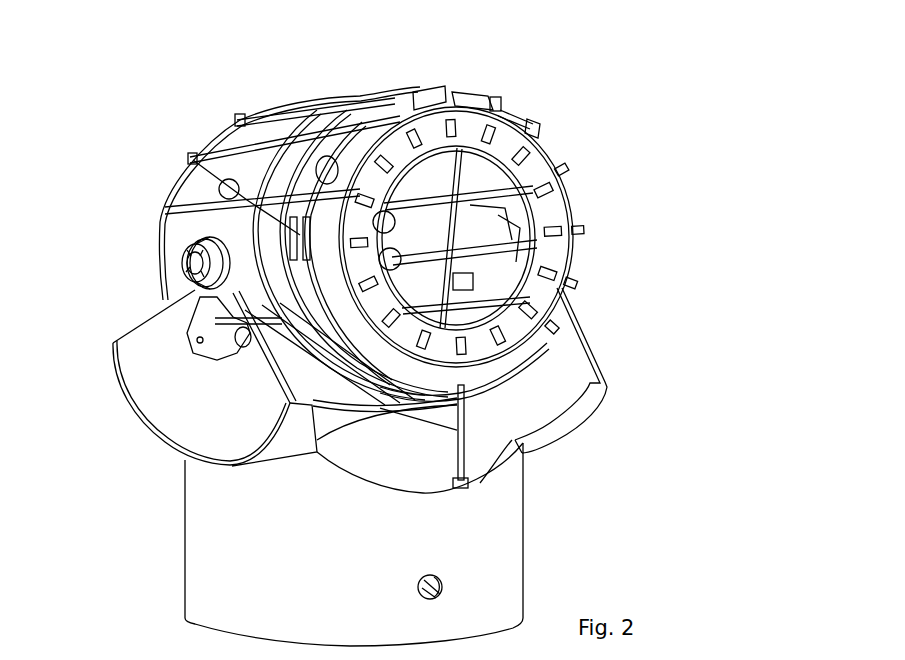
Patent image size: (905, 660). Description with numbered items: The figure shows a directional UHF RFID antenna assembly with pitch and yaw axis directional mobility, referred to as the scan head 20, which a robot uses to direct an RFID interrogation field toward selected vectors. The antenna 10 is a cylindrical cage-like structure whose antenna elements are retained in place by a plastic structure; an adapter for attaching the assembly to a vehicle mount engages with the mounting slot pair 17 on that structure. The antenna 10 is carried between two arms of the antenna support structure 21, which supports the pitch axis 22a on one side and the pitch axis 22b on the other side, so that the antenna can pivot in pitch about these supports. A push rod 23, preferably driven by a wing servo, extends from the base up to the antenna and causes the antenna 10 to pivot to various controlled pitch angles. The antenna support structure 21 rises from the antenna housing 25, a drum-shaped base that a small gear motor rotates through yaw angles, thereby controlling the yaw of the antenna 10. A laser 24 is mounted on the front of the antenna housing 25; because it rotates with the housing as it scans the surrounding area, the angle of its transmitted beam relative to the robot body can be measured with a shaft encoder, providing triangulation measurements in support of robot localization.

The antenna 10 is at (527, 103).
The mounting slot pair 17 is at (682, 108).
The scan head 20 is at (140, 108).
The antenna support structure 21 is at (157, 327).
The pitch axis 22a is at (190, 262).
The pitch axis 22b is at (513, 252).
The push rod 23 is at (463, 440).
The laser 24 is at (447, 580).
The antenna housing 25 is at (210, 565).